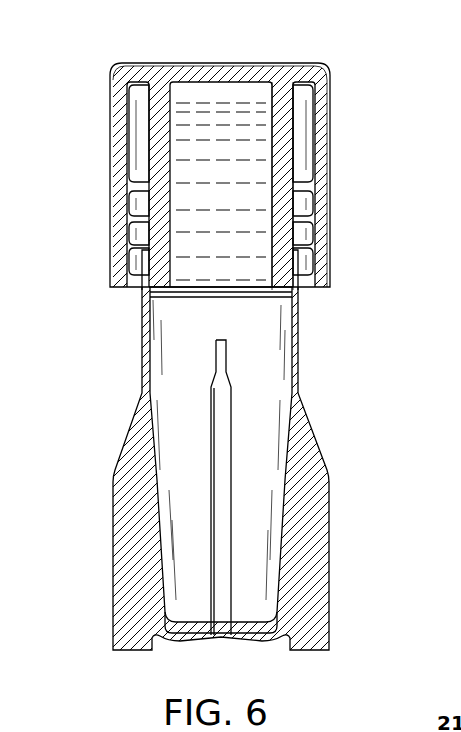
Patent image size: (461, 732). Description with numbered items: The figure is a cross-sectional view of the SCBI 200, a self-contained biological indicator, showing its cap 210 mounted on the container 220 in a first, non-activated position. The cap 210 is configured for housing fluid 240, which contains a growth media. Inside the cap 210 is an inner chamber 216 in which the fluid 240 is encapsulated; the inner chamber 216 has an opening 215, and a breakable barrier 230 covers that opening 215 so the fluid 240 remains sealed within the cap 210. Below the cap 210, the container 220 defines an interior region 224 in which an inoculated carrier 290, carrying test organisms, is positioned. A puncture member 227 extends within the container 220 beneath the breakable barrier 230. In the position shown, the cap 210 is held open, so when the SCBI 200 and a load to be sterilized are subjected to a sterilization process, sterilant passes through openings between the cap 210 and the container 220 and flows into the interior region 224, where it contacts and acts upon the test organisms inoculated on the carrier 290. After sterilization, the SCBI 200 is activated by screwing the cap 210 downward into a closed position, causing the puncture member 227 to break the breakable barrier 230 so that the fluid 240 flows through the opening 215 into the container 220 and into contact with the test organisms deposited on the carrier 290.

The SCBI 200 is at (350, 308).
The cap 210 is at (344, 115).
The inner chamber 216 is at (214, 94).
The fluid 240 is at (257, 220).
The breakable barrier 230 is at (244, 298).
The opening 215 is at (182, 290).
The container 220 is at (113, 508).
The interior region 224 is at (174, 410).
The puncture member 227 is at (232, 484).
The inoculated carrier 290 is at (250, 620).